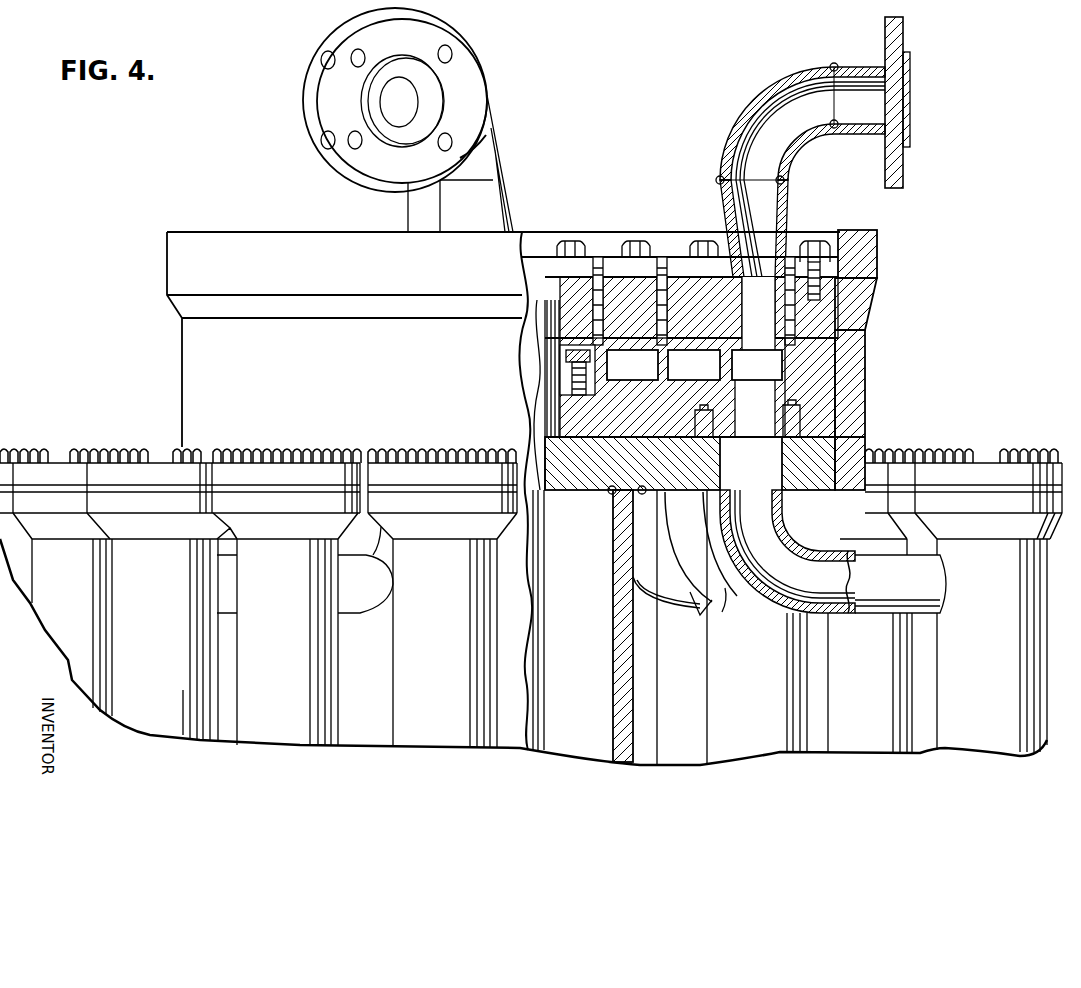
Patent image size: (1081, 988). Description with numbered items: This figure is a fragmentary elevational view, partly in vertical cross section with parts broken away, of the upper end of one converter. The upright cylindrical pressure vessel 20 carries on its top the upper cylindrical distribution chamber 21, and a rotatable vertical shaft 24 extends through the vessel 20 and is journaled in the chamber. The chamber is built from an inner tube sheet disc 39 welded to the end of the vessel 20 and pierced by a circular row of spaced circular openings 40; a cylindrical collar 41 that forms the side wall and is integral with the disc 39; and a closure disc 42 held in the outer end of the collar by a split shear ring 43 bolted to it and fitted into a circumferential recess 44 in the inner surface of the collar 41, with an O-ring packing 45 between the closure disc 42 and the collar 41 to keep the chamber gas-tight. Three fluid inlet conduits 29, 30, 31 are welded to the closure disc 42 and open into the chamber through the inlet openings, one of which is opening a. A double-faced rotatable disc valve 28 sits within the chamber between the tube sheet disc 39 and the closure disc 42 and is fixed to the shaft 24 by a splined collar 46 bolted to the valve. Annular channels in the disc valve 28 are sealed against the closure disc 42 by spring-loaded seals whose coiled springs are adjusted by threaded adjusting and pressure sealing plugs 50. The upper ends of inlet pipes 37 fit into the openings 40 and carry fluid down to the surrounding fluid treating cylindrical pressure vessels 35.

The upright cylindrical pressure vessel 20 is at (640, 760).
The upper cylindrical distribution chamber 21 is at (884, 376).
The rotatable vertical shaft 24 is at (541, 577).
The double-faced rotatable disc valve 28 is at (835, 393).
The fluid inlet conduit 29 is at (742, 130).
The fluid inlet conduit 30 is at (357, 22).
The fluid inlet conduit 31 is at (497, 140).
The fluid treating cylindrical pressure vessel 35 is at (997, 609).
The inlet pipe 37 is at (702, 605).
The inner tube sheet disc 39 is at (640, 473).
The circular opening 40 is at (752, 463).
The cylindrical collar 41 is at (870, 352).
The closure disc 42 is at (625, 277).
The split shear ring 43 is at (845, 262).
The circumferential recess 44 is at (858, 282).
The O-ring packing 45 is at (863, 310).
The splined collar 46 is at (562, 368).
The adjusting and pressure sealing plug 50 is at (665, 270).
The inlet opening a is at (763, 250).